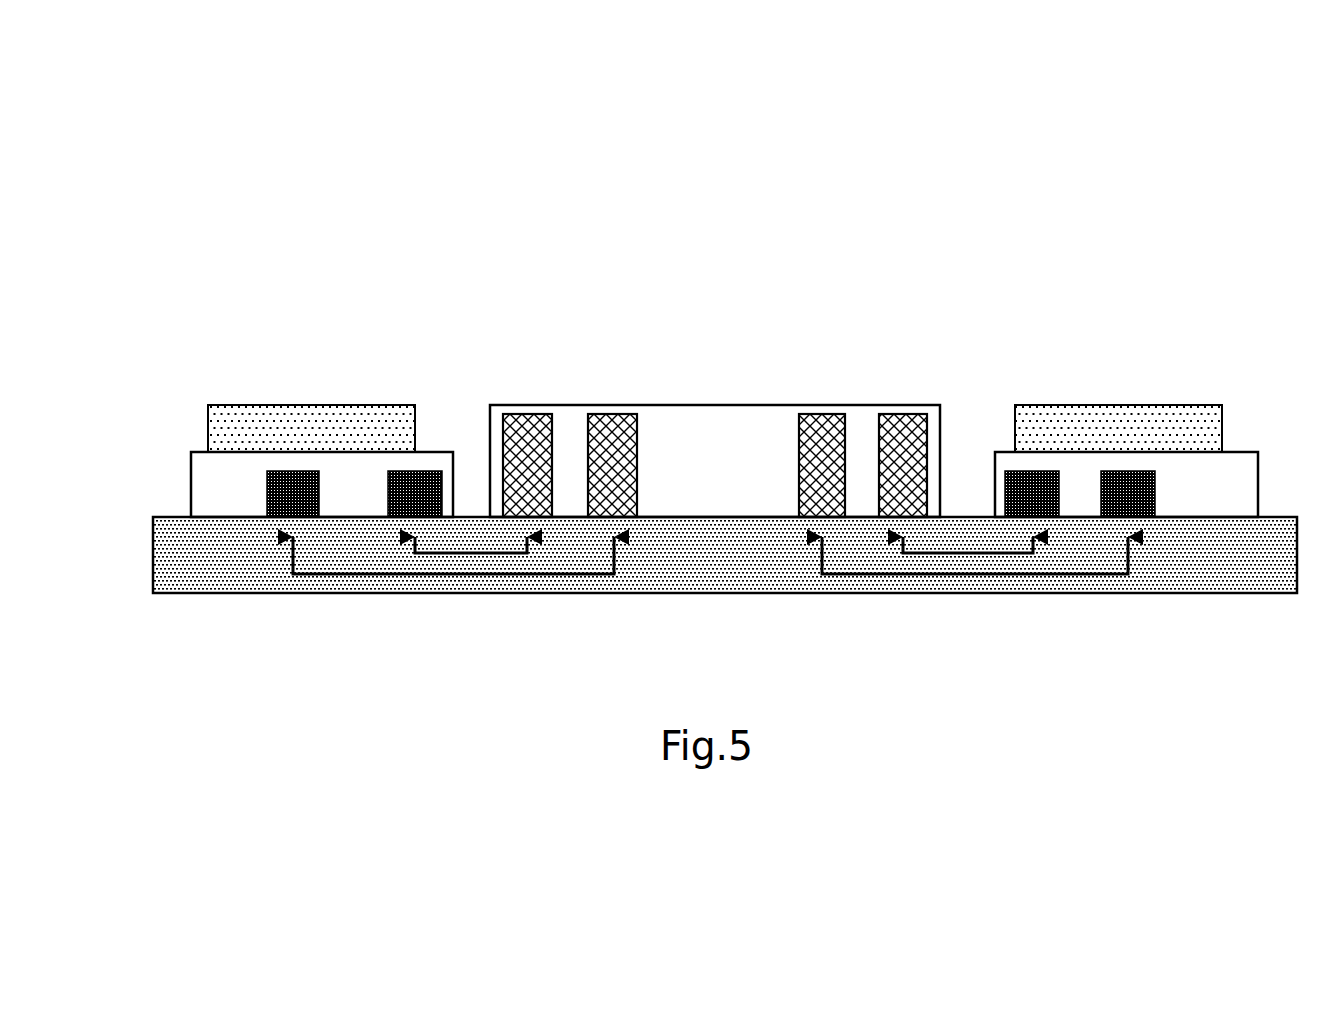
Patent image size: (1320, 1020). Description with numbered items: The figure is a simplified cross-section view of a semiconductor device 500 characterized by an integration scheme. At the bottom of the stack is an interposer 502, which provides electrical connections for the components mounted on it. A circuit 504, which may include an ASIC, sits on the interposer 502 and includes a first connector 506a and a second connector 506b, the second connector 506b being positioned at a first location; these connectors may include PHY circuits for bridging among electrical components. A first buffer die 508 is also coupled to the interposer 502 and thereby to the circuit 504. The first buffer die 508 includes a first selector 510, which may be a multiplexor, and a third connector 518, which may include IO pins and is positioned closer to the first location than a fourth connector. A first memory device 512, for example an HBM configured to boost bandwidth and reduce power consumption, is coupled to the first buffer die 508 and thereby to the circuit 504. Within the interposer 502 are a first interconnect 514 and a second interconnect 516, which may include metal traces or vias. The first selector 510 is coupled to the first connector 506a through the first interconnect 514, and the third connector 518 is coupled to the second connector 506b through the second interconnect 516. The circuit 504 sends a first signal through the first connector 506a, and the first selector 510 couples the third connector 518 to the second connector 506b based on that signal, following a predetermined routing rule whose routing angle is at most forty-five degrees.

The semiconductor device 500 is at (921, 199).
The interposer 502 is at (772, 578).
The circuit 504 is at (695, 437).
The first connector 506a is at (525, 437).
The second connector 506b is at (608, 437).
The first buffer die 508 is at (237, 498).
The first selector 510 is at (438, 477).
The first memory device 512 is at (332, 423).
The first interconnect 514 is at (462, 557).
The second interconnect 516 is at (572, 575).
The third connector 518 is at (288, 477).